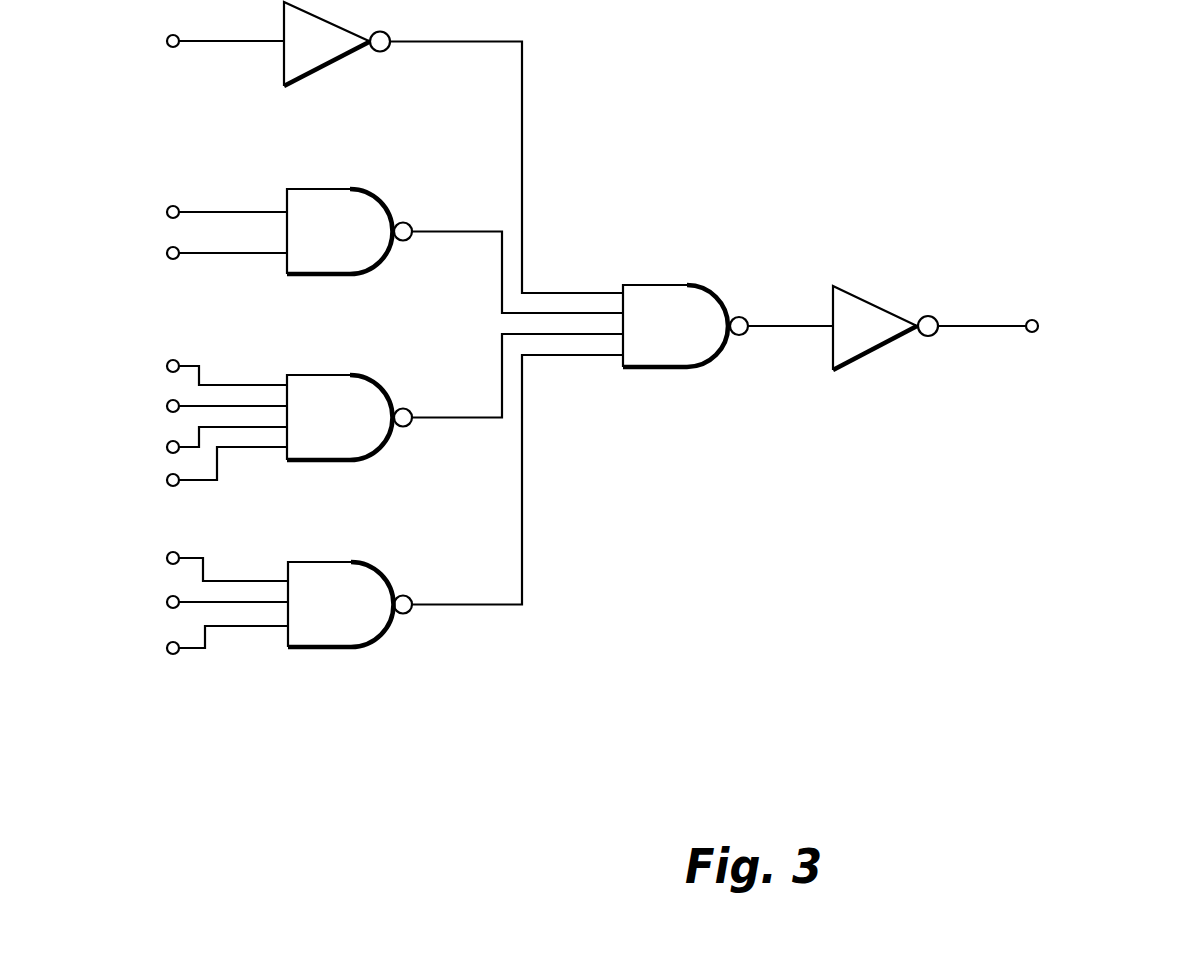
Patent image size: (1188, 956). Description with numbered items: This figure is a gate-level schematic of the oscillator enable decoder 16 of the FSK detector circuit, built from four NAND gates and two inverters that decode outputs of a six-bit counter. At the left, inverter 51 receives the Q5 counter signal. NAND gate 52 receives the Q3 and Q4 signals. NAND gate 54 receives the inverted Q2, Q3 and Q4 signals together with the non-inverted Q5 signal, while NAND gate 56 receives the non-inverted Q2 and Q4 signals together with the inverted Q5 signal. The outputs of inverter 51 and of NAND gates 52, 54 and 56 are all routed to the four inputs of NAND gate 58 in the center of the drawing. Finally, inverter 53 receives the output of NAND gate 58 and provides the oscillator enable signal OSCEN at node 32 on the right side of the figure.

The oscillator enable decoder 16 is at (786, 155).
The inverter 51 is at (337, 63).
The NAND gate 52 is at (359, 275).
The inverter 53 is at (877, 350).
The NAND gate 54 is at (359, 461).
The NAND gate 56 is at (359, 648).
The NAND gate 58 is at (693, 368).
The node 32 is at (1037, 332).